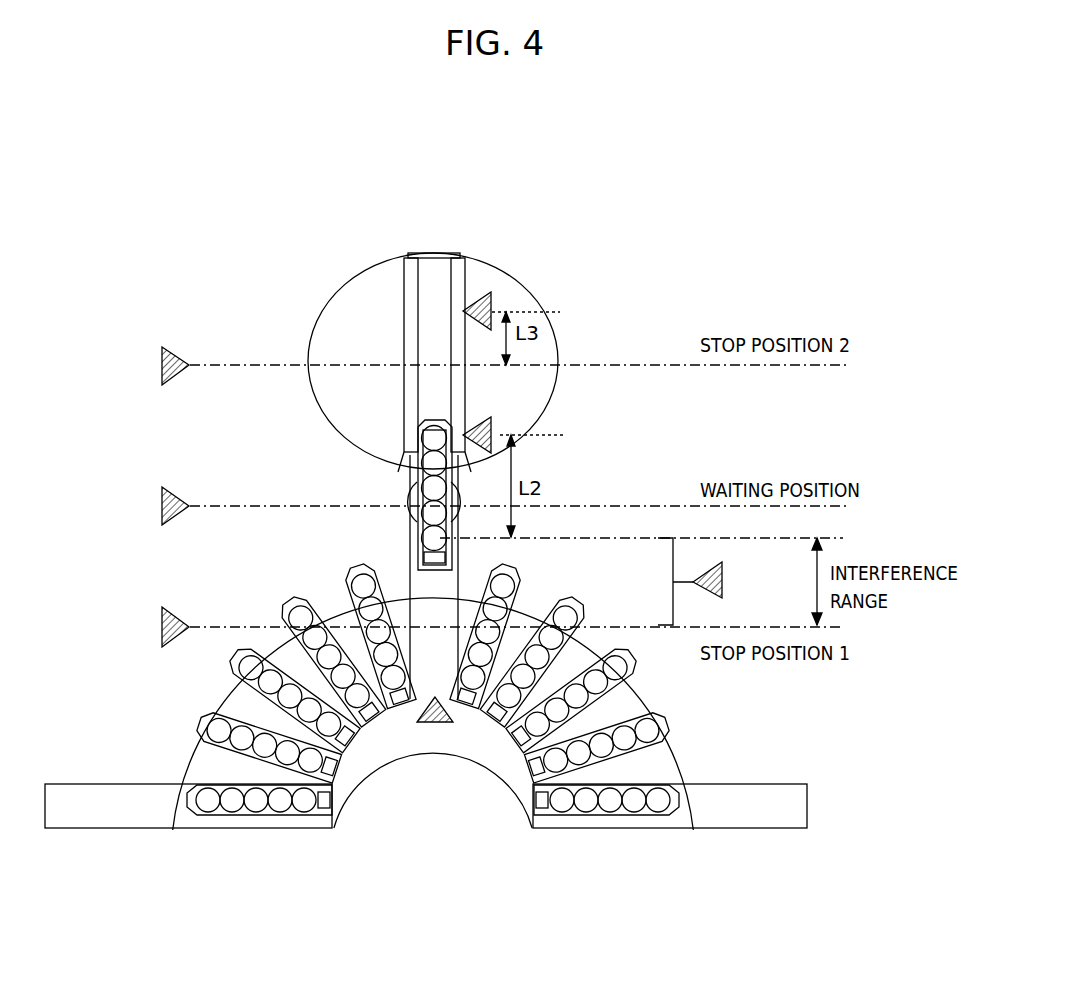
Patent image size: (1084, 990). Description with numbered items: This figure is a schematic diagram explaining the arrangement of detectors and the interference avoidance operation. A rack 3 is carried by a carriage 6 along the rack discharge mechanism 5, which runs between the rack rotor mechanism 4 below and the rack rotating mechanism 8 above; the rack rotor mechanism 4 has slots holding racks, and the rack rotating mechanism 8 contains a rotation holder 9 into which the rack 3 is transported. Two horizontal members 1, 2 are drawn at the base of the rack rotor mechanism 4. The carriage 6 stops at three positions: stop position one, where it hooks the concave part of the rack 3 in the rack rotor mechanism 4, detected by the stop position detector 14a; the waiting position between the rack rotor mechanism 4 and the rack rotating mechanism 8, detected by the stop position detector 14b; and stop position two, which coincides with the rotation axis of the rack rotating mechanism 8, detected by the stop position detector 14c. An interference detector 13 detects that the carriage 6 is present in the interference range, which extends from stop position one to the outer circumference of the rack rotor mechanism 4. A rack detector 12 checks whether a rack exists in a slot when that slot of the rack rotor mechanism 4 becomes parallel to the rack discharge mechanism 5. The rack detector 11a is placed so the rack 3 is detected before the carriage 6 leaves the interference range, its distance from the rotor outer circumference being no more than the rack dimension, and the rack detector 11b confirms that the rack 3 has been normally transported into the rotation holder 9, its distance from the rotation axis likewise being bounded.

The first magazine bar 1 is at (147, 828).
The second magazine bar 2 is at (712, 784).
The rack 3 is at (418, 428).
The rack rotor mechanism 4 is at (195, 691).
The rack discharge mechanism 5 is at (410, 567).
The carriage 6 is at (409, 498).
The rack rotating mechanism 8 is at (333, 296).
The rotation holder 9 is at (404, 290).
The rack detector 11a is at (491, 420).
The rack detector 11b is at (491, 297).
The rack detector 12 is at (420, 722).
The interference detector 13 is at (722, 582).
The stop position detector 14a is at (163, 622).
The stop position detector 14b is at (163, 503).
The stop position detector 14c is at (163, 362).